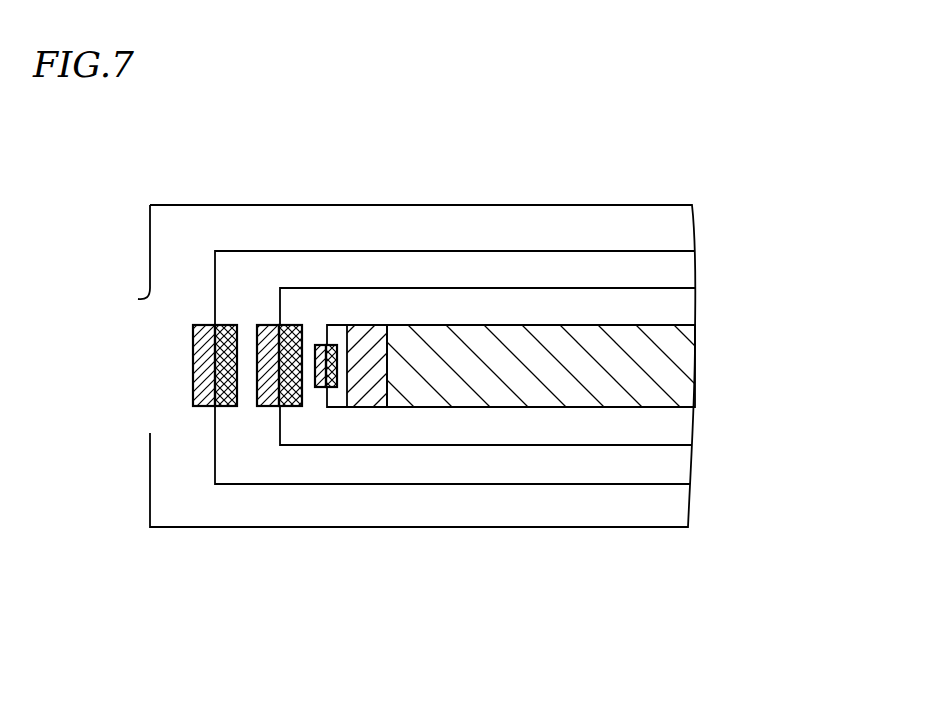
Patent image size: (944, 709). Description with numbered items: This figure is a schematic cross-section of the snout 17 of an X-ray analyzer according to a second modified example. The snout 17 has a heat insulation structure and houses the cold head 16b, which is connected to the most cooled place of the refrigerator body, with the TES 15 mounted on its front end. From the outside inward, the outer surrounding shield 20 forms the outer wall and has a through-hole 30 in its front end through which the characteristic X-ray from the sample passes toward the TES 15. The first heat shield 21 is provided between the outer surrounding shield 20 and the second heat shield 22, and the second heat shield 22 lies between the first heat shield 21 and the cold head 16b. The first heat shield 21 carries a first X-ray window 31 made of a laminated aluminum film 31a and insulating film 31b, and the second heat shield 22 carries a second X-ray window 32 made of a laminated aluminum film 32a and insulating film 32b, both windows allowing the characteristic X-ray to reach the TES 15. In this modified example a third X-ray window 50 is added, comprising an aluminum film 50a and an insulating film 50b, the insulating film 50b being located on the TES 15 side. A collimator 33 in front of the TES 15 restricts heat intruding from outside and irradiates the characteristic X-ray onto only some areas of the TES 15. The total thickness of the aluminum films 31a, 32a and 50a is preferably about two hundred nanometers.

The snout 17 is at (748, 172).
The outer surrounding shield 20 is at (200, 205).
The first heat shield 21 is at (418, 251).
The second heat shield 22 is at (508, 288).
The through-hole 30 is at (138, 299).
The collimator 33 is at (338, 325).
The TES 15 is at (372, 400).
The cold head 16b is at (583, 340).
The first X-ray window 31 is at (205, 595).
The aluminum film 31a is at (203, 398).
The insulating film 31b is at (224, 398).
The second X-ray window 32 is at (338, 595).
The aluminum film 32a is at (267, 398).
The insulating film 32b is at (290, 398).
The third X-ray window 50 is at (455, 648).
The aluminum film 50a is at (322, 387).
The insulating film 50b is at (333, 387).